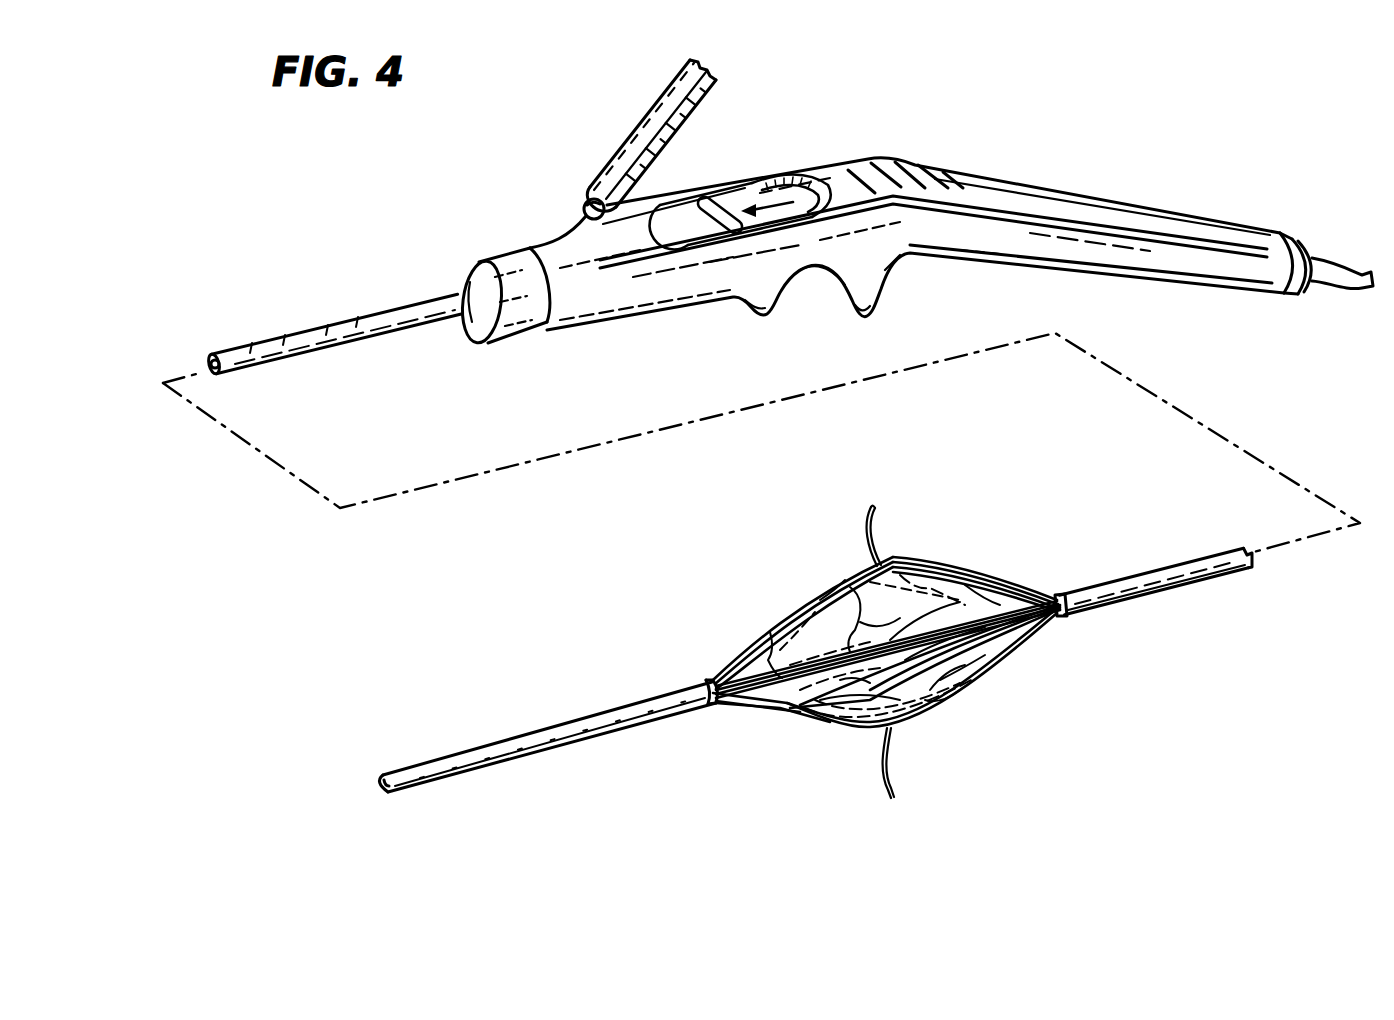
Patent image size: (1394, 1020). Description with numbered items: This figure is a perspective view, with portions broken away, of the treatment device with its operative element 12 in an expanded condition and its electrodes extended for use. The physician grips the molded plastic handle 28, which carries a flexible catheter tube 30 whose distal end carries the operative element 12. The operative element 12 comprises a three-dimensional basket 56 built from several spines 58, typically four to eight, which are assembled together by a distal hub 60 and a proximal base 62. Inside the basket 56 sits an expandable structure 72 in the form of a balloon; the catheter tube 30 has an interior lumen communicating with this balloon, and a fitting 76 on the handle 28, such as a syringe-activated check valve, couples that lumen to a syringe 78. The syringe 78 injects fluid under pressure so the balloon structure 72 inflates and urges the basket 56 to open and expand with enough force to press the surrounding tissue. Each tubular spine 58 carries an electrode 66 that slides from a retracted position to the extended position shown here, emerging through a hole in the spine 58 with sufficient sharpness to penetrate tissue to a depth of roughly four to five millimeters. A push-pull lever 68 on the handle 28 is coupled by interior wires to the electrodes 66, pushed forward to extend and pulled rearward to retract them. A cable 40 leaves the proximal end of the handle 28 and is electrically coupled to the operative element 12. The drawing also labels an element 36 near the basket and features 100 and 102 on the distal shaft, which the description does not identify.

The operative element 12 is at (934, 812).
The handle 28 is at (958, 178).
The catheter tube 30 is at (343, 343).
The expandable basket 36 is at (890, 640).
The cable 40 is at (1323, 262).
The basket 56 is at (1002, 580).
The spines 58 is at (803, 592).
The distal hub 60 is at (710, 694).
The proximal base 62 is at (1068, 612).
The electrode 66 is at (874, 508).
The push-pull lever 68 is at (728, 200).
The expandable structure 72 is at (912, 587).
The fitting 76 is at (588, 200).
The syringe 78 is at (657, 108).
The inner shaft 100 is at (500, 752).
The distal tip 102 is at (383, 792).